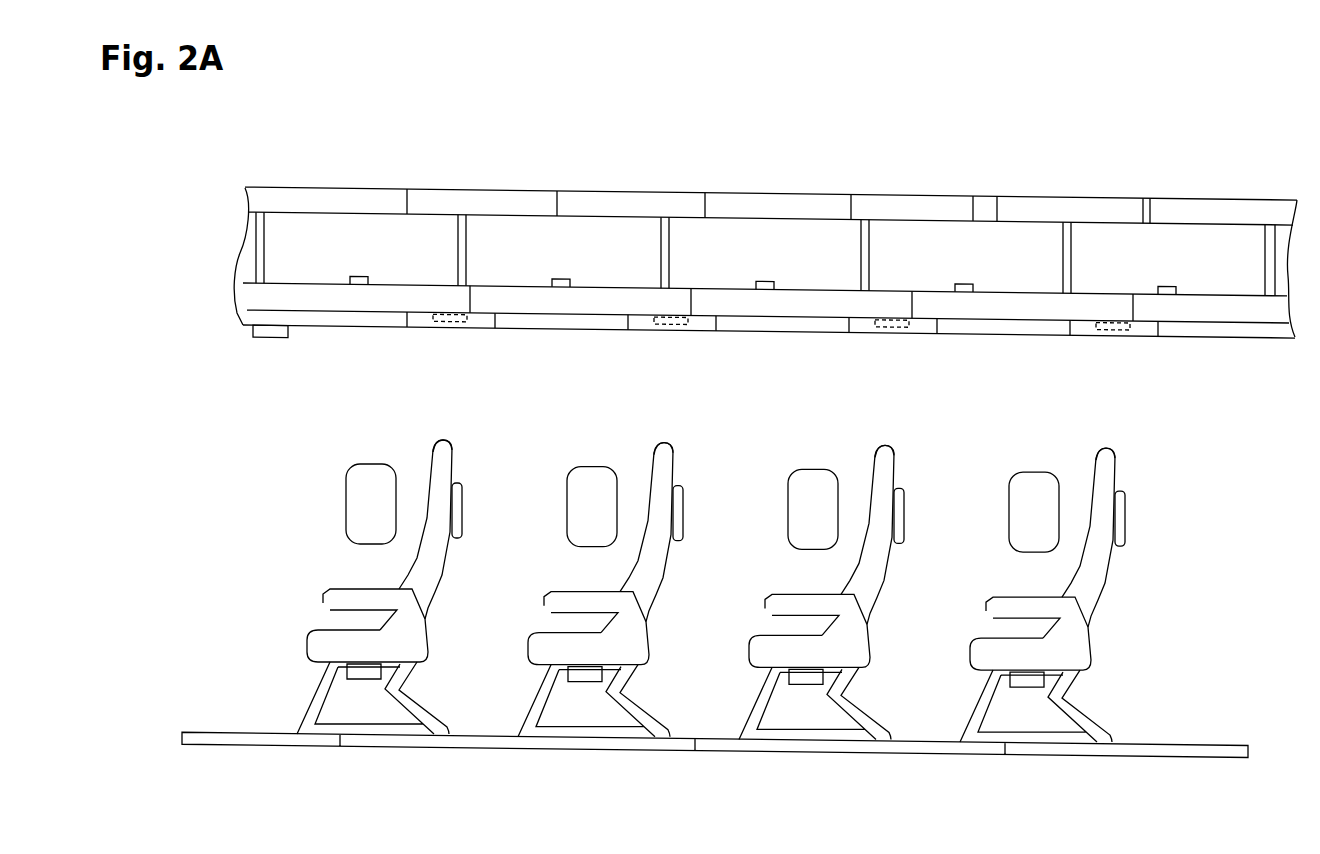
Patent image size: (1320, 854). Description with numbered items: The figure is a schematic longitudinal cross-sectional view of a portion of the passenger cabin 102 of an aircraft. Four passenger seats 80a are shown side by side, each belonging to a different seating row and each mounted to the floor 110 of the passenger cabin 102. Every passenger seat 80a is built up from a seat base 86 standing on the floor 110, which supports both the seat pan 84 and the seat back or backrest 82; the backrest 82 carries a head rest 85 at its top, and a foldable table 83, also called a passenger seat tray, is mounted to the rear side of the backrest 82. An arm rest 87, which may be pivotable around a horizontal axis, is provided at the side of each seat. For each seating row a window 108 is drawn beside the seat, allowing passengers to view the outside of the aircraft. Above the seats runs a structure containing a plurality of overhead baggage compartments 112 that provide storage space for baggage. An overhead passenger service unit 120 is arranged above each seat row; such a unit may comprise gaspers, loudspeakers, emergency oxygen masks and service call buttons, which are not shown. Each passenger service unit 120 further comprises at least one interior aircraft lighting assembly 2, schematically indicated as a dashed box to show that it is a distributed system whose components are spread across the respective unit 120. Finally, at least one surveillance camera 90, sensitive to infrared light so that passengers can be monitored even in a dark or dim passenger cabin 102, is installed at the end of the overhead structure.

The interior aircraft lighting assembly 2 is at (762, 352).
The passenger seat 80a is at (737, 543).
The backrest 82 is at (791, 533).
The foldable table 83 is at (833, 489).
The seat pan 84 is at (658, 623).
The head rest 85 is at (807, 431).
The seat base 86 is at (711, 683).
The arm rest 87 is at (681, 588).
The surveillance camera 90 is at (254, 329).
The passenger cabin 102 is at (236, 585).
The window 108 is at (660, 508).
The floor 110 is at (1197, 745).
The overhead baggage compartment 112 is at (1177, 238).
The overhead passenger service unit 120 is at (754, 388).